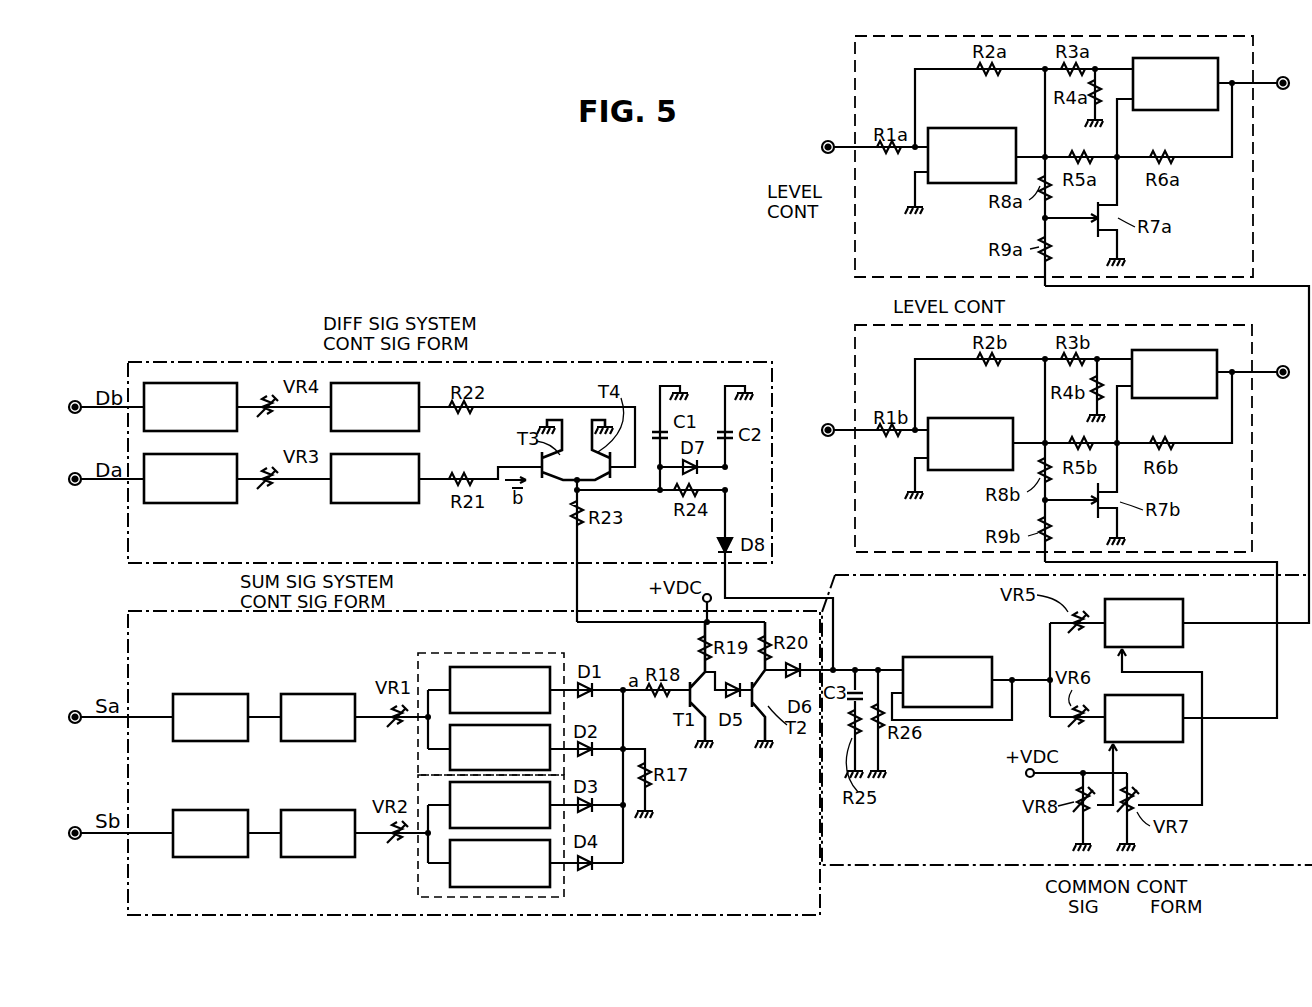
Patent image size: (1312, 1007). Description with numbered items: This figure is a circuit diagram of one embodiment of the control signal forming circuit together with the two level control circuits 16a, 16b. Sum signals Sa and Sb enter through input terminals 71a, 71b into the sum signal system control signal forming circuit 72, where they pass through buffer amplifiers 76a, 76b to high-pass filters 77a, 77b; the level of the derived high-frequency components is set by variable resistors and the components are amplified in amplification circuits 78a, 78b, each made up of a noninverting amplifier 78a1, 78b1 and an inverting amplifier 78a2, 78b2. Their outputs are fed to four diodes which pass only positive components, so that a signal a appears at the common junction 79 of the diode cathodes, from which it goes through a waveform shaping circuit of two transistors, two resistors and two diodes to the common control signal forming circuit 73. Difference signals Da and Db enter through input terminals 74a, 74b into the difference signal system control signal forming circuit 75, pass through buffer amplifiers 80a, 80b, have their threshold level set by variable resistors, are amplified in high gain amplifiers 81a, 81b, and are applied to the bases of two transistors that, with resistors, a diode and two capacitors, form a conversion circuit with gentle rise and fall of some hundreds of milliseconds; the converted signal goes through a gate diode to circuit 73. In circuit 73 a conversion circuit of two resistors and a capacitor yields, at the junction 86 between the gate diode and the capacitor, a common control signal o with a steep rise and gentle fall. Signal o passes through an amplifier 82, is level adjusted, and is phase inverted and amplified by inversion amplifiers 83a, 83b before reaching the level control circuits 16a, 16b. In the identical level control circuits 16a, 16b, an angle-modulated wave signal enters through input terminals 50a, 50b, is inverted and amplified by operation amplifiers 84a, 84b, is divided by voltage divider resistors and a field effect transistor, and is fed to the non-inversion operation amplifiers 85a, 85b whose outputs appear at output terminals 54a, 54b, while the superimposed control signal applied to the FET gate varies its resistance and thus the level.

The difference signal system control signal forming circuit 75 is at (556, 360).
The sum signal system control signal forming circuit 72 is at (478, 610).
The common control signal forming circuit 73 is at (840, 570).
The input terminal 74a is at (75, 472).
The input terminal 74b is at (75, 400).
The buffer amplifier 80a is at (190, 503).
The buffer amplifier 80b is at (211, 432).
The high gain amplifier 81a is at (370, 503).
The high gain amplifier 81b is at (400, 432).
The input terminal 71a is at (75, 710).
The input terminal 71b is at (77, 826).
The buffer amplifier 76a is at (206, 694).
The buffer amplifier 76b is at (208, 810).
The high-pass filter 77a is at (314, 694).
The high-pass filter 77b is at (316, 810).
The amplification circuit 78a is at (418, 665).
The noninverting amplifier 78a1 is at (527, 667).
The inverting amplifier 78a2 is at (448, 730).
The amplification circuit 78b is at (566, 889).
The noninverting amplifier 78b1 is at (443, 834).
The inverting amplifier 78b2 is at (443, 882).
The common junction 79 is at (623, 685).
The junction 86 is at (834, 668).
The amplifier 82 is at (950, 657).
The inversion amplifier 83a is at (1103, 645).
The inversion amplifier 83b is at (1140, 744).
The level control circuit 16a is at (1253, 50).
The level control circuit 16b is at (1252, 330).
The input terminal 50a is at (828, 140).
The input terminal 50b is at (828, 424).
The output terminal 54a is at (1282, 92).
The output terminal 54b is at (1283, 380).
The operation amplifier 84a is at (950, 128).
The operation amplifier 84b is at (952, 418).
The operation amplifier 85a is at (1150, 113).
The operation amplifier 85b is at (1157, 405).